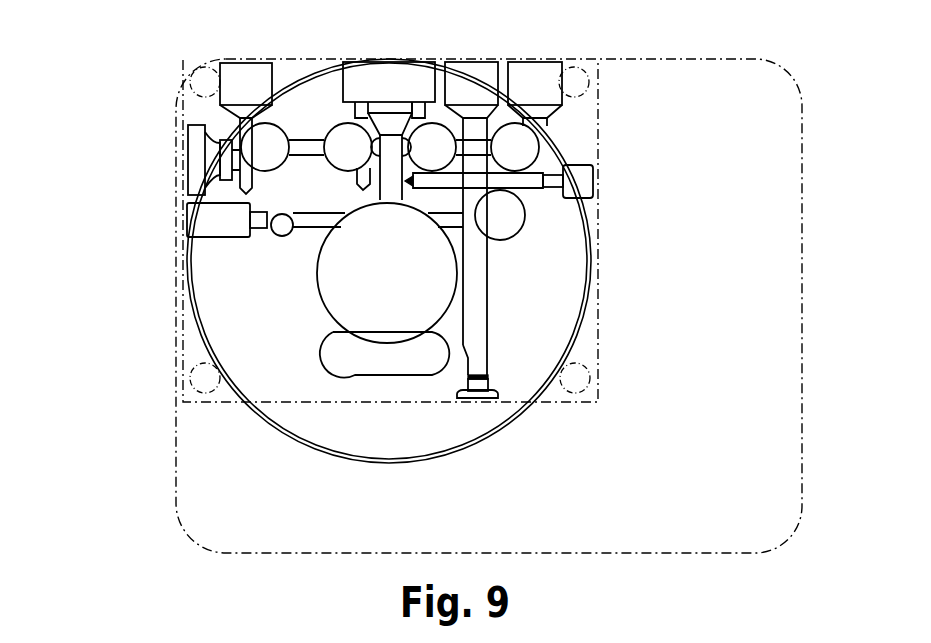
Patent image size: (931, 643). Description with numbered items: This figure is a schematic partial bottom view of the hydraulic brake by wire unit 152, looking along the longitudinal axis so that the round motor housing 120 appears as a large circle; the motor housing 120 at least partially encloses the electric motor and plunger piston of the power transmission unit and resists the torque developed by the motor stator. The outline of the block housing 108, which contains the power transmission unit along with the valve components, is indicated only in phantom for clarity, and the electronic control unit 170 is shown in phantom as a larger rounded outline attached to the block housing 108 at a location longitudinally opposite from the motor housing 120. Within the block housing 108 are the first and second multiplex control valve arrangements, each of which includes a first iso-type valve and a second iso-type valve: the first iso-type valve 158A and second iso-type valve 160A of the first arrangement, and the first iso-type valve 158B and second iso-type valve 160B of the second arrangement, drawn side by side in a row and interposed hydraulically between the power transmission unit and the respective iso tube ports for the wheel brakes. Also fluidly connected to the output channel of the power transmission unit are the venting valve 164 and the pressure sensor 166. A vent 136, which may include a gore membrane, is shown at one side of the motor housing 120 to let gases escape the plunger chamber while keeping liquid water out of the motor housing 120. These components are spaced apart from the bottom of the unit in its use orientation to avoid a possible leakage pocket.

The block housing 108 is at (600, 138).
The motor housing 120 is at (197, 327).
The vent 136 is at (190, 153).
The hydraulic brake by wire unit 152 is at (141, 108).
The first iso-type valve 158A is at (277, 150).
The first iso-type valve 158B is at (517, 143).
The second iso-type valve 160A is at (352, 146).
The second iso-type valve 160B is at (435, 152).
The venting valve 164 is at (502, 218).
The pressure sensor 166 is at (283, 228).
The electronic control unit 170 is at (804, 350).